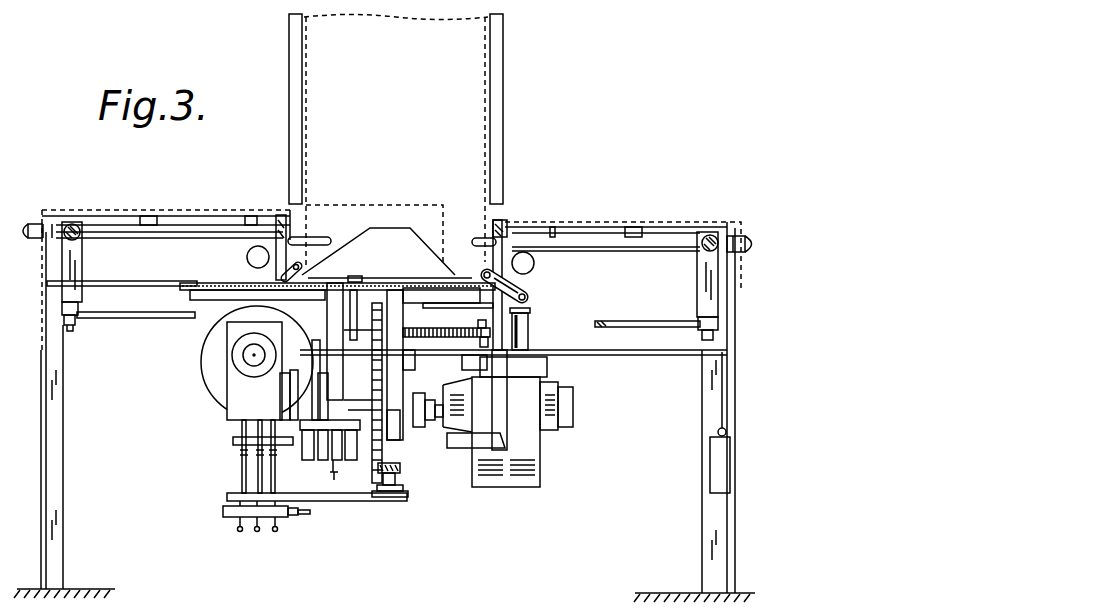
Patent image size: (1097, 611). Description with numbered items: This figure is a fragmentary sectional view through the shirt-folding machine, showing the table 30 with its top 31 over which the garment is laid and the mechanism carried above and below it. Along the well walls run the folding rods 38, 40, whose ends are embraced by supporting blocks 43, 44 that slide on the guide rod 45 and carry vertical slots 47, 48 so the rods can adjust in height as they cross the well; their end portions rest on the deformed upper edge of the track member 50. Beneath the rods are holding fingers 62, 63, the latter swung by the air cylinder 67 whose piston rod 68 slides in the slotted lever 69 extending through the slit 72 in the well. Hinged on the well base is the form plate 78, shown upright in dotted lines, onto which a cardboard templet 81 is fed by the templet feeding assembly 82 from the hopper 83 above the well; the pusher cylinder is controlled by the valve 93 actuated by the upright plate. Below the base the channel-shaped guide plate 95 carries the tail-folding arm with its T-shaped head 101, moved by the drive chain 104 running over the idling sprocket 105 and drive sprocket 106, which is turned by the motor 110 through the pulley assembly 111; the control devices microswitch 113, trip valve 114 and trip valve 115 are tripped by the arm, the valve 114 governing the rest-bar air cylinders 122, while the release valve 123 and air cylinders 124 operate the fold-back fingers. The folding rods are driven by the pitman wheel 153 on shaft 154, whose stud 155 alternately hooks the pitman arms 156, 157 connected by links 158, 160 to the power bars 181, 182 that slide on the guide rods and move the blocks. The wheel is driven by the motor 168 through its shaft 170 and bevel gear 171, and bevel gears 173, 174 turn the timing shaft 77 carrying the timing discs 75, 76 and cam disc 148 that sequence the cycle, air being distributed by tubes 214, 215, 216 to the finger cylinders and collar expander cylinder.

The table 30 is at (60, 467).
The table top 31 is at (118, 210).
The folding rod 38 is at (270, 218).
The folding rod 40 is at (505, 240).
The supporting block 43 is at (300, 212).
The supporting block 44 is at (497, 218).
The guide rod 45 is at (330, 237).
The slot 47 is at (278, 212).
The slot 48 is at (505, 222).
The track member 50 is at (390, 240).
The holding finger 62 is at (250, 238).
The holding finger 63 is at (530, 248).
The air cylinder 67 is at (530, 328).
The piston rod 68 is at (531, 310).
The lever 69 is at (528, 296).
The slit 72 is at (465, 448).
The timing disc 75 is at (260, 492).
The timing disc 76 is at (232, 518).
The timing shaft 77 is at (240, 442).
The form plate 78 is at (487, 131).
The cardboard templet 81 is at (440, 262).
The templet feeding assembly 82 is at (506, 60).
The hopper 83 is at (503, 105).
The valve 93 is at (357, 276).
The guide plate 95 is at (410, 288).
The head 101 is at (450, 288).
The drive chain 104 is at (370, 365).
The idling sprocket 105 is at (370, 340).
The drive sprocket 106 is at (350, 501).
The motor 110 is at (205, 380).
The pulley assembly 111 is at (310, 420).
The microswitch 113 is at (418, 390).
The trip valve 114 is at (410, 355).
The trip valve 115 is at (410, 328).
The air cylinder 122 is at (170, 215).
The release valve 123 is at (392, 290).
The air cylinder 124 is at (246, 258).
The cam disc 148 is at (314, 462).
The pitman wheel 153 is at (387, 325).
The shaft 154 is at (402, 466).
The stud 155 is at (478, 323).
The pitman arm 156 is at (116, 313).
The pitman arm 157 is at (636, 321).
The connecting link 158 is at (60, 314).
The connecting link 160 is at (712, 305).
The motor 168 is at (535, 487).
The shaft 170 is at (440, 426).
The bevel gear 171 is at (400, 438).
The bevel gear 173 is at (405, 470).
The bevel gear 174 is at (372, 470).
The power bar 181 is at (70, 223).
The power bar 182 is at (745, 236).
The tube 214 is at (242, 532).
The tube 215 is at (259, 532).
The tube 216 is at (278, 531).